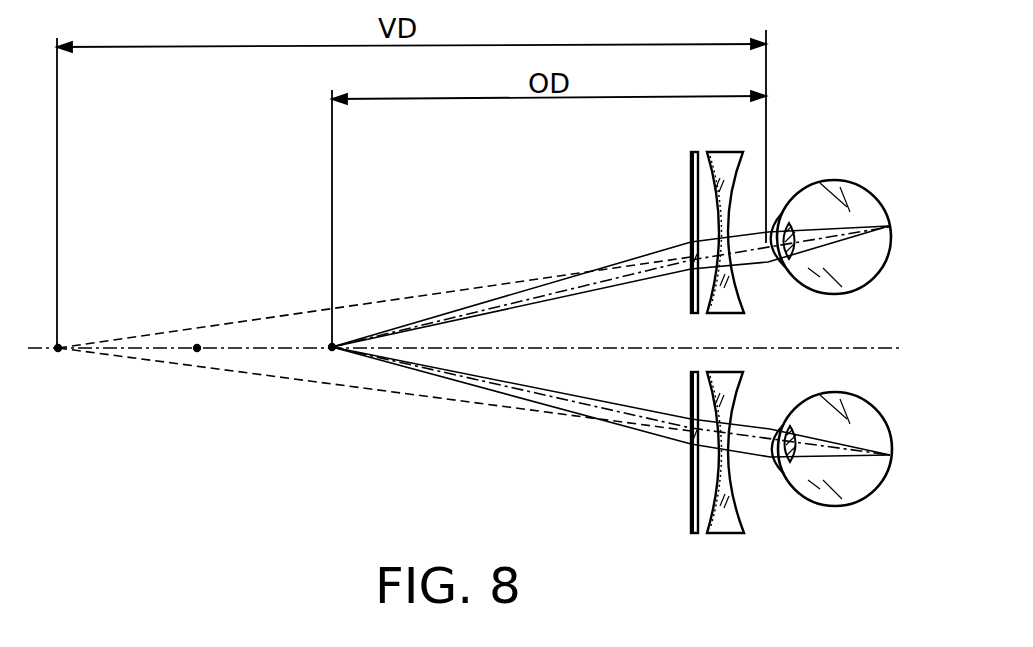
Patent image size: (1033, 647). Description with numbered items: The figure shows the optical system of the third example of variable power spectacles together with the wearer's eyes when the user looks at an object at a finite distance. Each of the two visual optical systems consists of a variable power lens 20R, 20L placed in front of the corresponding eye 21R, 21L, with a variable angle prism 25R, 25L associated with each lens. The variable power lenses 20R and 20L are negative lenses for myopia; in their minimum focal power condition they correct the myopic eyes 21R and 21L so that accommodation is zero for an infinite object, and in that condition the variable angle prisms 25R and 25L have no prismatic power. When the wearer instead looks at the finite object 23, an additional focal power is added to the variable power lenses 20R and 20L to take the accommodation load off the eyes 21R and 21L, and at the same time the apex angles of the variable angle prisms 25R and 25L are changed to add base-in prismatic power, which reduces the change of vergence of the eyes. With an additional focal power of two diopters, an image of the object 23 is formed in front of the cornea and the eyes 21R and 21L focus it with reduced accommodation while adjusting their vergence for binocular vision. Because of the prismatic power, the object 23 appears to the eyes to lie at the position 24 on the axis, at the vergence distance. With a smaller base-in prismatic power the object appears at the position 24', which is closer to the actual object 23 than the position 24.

The variable power lens 20R is at (693, 178).
The variable power lens 20L is at (692, 492).
The eye 21R is at (851, 180).
The eye 21L is at (824, 507).
The finite object 23 is at (332, 350).
The position 24 is at (370, 344).
The position 24' is at (209, 385).
The variable angle prism 25R is at (688, 298).
The variable angle prism 25L is at (688, 391).